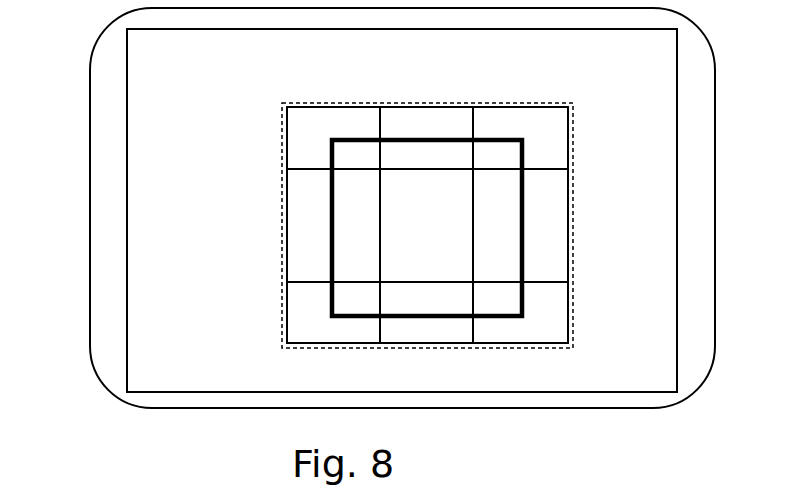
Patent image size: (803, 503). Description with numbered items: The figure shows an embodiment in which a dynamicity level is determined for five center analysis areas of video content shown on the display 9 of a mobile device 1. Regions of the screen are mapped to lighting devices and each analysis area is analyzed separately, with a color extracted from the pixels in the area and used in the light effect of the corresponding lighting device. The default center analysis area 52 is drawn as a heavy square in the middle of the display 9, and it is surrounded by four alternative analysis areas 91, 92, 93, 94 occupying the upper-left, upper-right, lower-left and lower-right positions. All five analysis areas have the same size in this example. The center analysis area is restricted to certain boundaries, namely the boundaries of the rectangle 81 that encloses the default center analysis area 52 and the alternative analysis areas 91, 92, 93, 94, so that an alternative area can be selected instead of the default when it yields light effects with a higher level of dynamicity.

The mobile device 1 is at (91, 218).
The display 9 is at (677, 370).
The rectangle 81 is at (345, 103).
The default center analysis area 52 is at (427, 228).
The alternative analysis area 91 is at (297, 128).
The alternative analysis area 92 is at (550, 137).
The alternative analysis area 93 is at (301, 312).
The alternative analysis area 94 is at (550, 317).